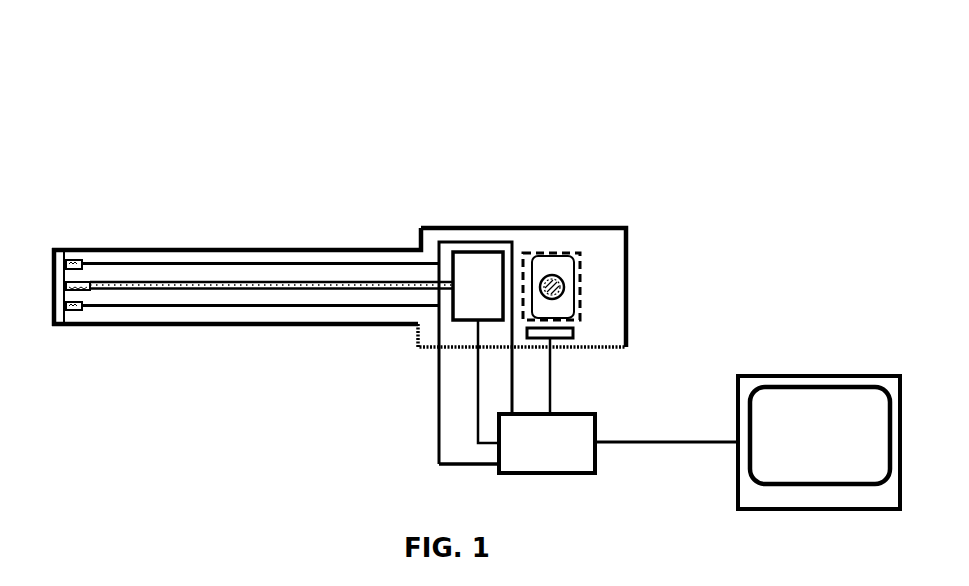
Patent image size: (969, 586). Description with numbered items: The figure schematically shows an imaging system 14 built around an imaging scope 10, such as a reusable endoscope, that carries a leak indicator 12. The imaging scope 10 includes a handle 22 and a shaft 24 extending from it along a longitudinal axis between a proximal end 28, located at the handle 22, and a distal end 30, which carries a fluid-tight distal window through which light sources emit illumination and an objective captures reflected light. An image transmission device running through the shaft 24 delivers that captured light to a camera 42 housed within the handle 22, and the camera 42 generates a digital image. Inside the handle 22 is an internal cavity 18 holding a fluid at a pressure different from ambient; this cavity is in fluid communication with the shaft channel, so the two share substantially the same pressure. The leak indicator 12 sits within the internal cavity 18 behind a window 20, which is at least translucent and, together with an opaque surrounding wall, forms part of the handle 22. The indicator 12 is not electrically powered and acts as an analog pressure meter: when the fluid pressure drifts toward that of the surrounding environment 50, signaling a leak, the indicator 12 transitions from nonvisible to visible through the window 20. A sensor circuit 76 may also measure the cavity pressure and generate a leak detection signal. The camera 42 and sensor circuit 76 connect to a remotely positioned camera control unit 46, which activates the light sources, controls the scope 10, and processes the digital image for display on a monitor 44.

The imaging system 14 is at (190, 70).
The imaging scope 10 is at (301, 150).
The surrounding environment 50 is at (437, 130).
The distal end 30 is at (65, 236).
The shaft 24 is at (213, 249).
The proximal end 28 is at (397, 235).
The handle 22 is at (511, 228).
The internal cavity 18 is at (604, 241).
The camera 42 is at (478, 347).
The leak indicator 12 is at (580, 281).
The window 20 is at (582, 311).
The sensor circuit 76 is at (573, 333).
The camera control unit 46 is at (588, 443).
The monitor 44 is at (819, 442).